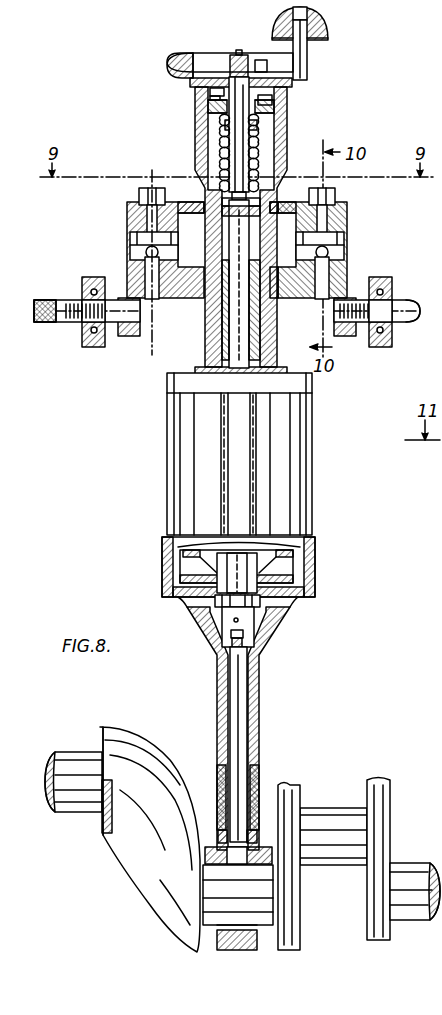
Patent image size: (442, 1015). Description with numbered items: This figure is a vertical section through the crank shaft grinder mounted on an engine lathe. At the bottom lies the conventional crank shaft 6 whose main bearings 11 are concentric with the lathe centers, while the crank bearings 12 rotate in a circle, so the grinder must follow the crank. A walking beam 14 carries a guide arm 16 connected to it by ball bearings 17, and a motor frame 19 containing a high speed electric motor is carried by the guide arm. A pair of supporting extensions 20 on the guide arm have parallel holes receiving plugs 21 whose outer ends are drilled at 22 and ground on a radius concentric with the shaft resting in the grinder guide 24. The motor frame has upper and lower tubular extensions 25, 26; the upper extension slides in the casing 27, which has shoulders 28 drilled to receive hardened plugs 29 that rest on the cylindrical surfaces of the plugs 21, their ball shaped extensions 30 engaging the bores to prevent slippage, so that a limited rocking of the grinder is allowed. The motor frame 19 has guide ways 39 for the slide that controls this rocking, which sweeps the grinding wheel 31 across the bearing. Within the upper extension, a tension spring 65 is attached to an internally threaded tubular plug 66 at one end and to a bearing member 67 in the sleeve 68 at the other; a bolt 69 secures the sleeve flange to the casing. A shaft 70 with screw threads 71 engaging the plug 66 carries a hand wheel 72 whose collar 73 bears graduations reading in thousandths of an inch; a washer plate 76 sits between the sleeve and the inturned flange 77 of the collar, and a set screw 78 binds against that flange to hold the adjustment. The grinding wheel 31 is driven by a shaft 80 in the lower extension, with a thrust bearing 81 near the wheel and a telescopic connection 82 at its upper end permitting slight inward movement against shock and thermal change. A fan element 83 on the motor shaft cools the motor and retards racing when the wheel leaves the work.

The crank shaft 6 is at (137, 733).
The main bearings 11 is at (333, 818).
The crank bearings 12 is at (70, 807).
The walking beam 14 is at (94, 278).
The guide arm 16 is at (135, 335).
The ball bearings 17 is at (80, 336).
The motor frame 19 is at (177, 412).
The supporting extensions 20 is at (167, 296).
The plugs 21 is at (152, 298).
The bores 22 is at (170, 240).
The grinder guide 24 is at (237, 947).
The upper tubular extension 25 is at (262, 345).
The lower tubular extension 26 is at (262, 695).
The casing 27 is at (282, 133).
The shoulders 28 is at (370, 206).
The hardened plugs 29 is at (138, 196).
The ball shaped extensions 30 is at (131, 246).
The grinding wheel 31 is at (222, 875).
The guide ways 39 is at (253, 455).
The tension spring 65 is at (258, 157).
The tubular plug 66 is at (229, 348).
The bearing member 67 is at (258, 127).
The sleeve 68 is at (222, 92).
The bolt 69 is at (273, 107).
The shaft 70 is at (233, 160).
The screw threads 71 is at (265, 192).
The hand wheel 72 is at (325, 33).
The collar 73 is at (207, 100).
The washer plate 76 is at (218, 88).
The inturned flange 77 is at (257, 78).
The set screw 78 is at (212, 53).
The shaft 80 is at (240, 738).
The thrust bearing 81 is at (258, 820).
The telescopic connection 82 is at (253, 643).
The fan element 83 is at (293, 560).